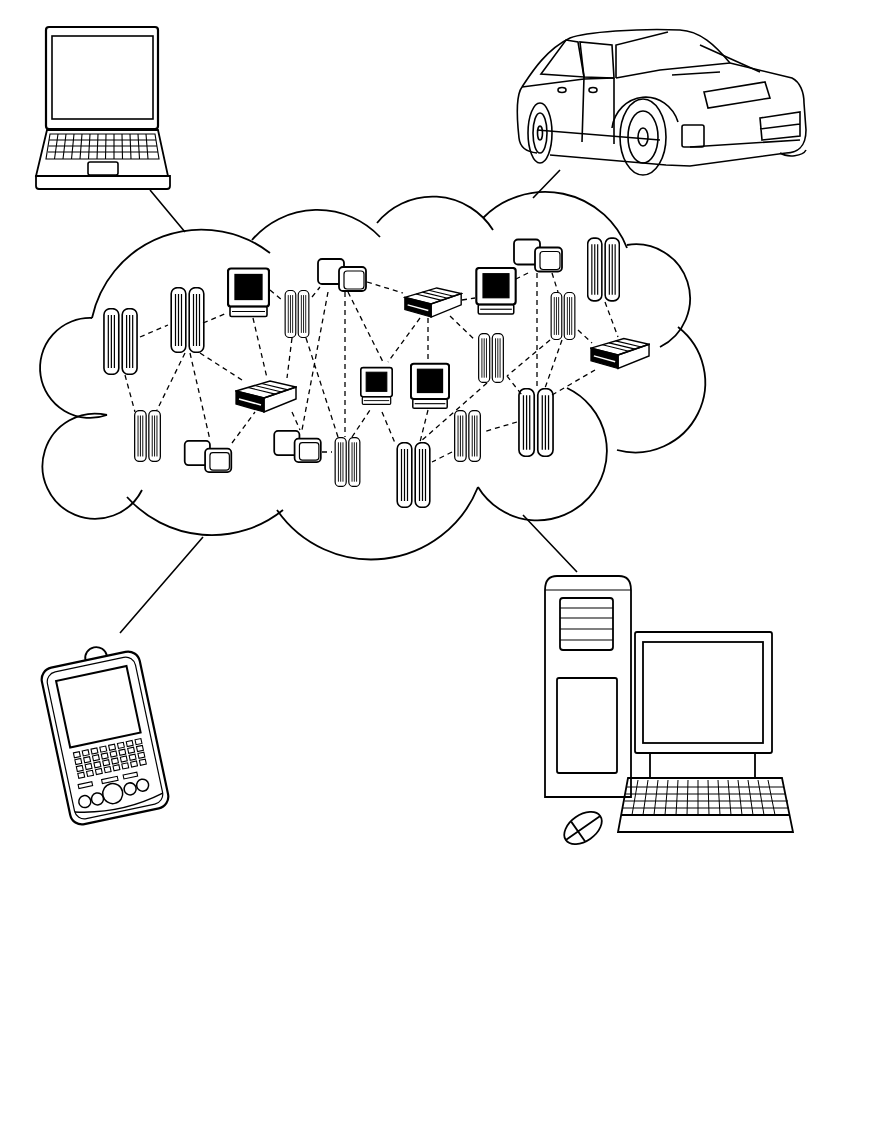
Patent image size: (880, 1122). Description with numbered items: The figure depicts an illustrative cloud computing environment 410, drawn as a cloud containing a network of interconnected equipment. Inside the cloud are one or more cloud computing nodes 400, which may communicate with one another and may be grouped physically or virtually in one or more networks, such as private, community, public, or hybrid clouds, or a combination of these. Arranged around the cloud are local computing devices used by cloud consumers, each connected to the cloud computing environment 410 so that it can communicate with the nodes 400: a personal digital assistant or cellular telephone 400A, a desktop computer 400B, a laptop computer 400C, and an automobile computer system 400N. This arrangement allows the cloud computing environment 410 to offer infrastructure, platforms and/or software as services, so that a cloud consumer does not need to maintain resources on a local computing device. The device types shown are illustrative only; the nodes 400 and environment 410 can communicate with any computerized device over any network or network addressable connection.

The cloud computing nodes 400 is at (660, 384).
The cloud computing environment 410 is at (705, 352).
The personal digital assistant (PDA) or cellular telephone 400A is at (153, 724).
The desktop computer 400B is at (700, 630).
The laptop computer 400C is at (160, 91).
The automobile computer system 400N is at (518, 103).